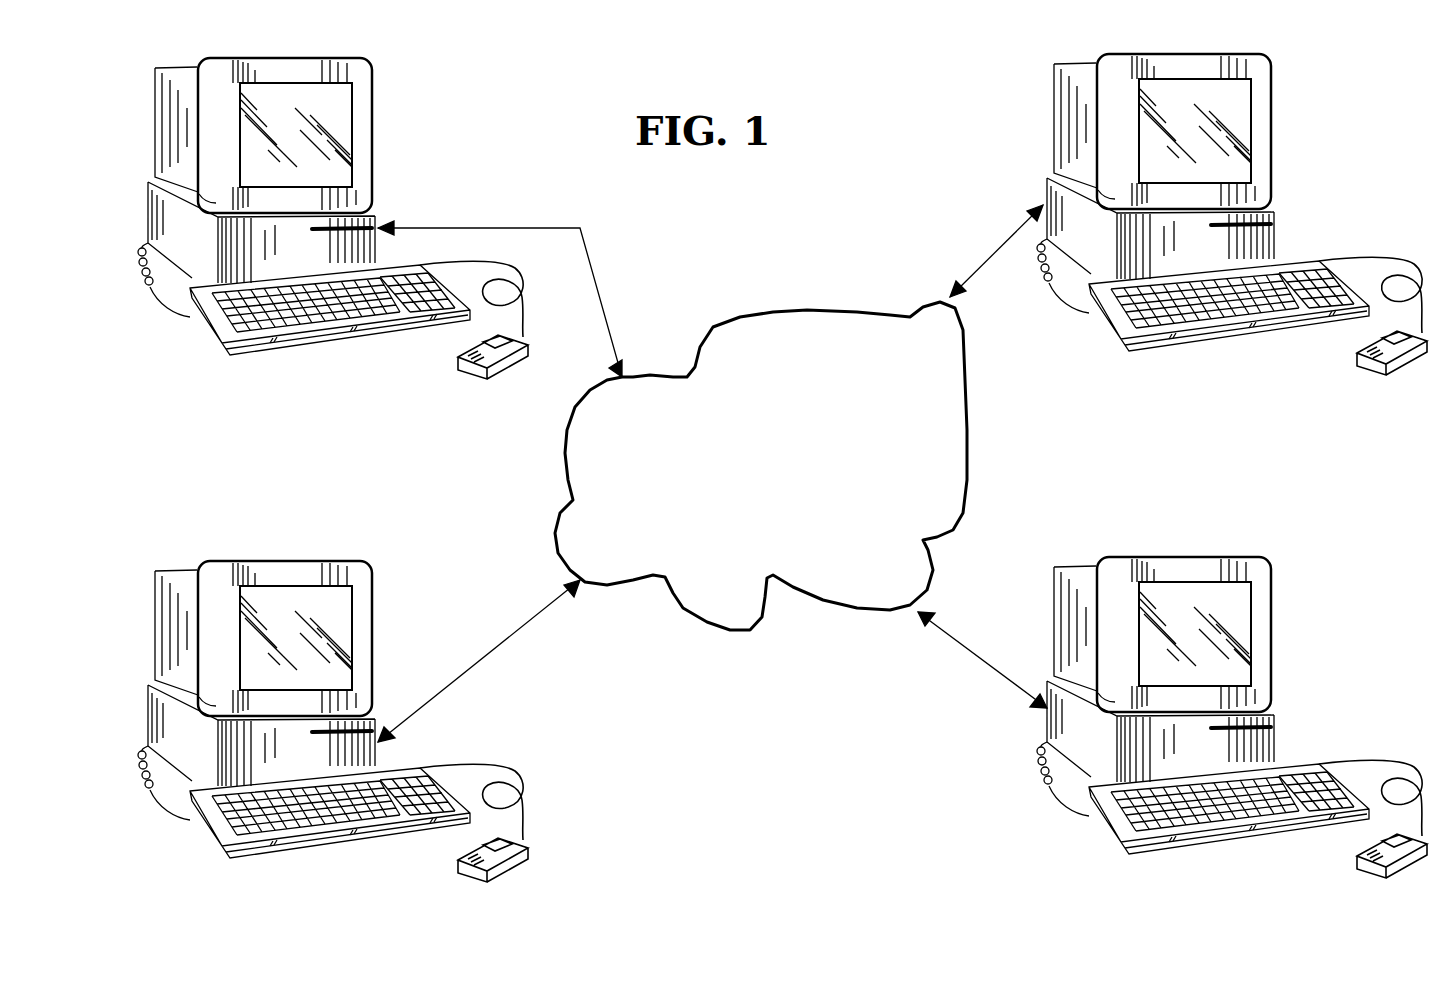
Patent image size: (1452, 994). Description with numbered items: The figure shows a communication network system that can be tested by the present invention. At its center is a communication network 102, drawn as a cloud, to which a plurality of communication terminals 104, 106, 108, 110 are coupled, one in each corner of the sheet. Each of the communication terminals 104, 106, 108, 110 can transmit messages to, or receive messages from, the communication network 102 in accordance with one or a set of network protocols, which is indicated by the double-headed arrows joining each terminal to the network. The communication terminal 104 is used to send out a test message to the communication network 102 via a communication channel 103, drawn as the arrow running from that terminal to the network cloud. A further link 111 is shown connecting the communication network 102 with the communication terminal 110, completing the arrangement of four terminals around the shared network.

The communication network 102 is at (797, 308).
The communication channel 103 is at (592, 268).
The communication terminal 104 is at (372, 156).
The communication terminal 106 is at (1270, 141).
The communication terminal 108 is at (372, 608).
The communication terminal 110 is at (1270, 635).
The communication link 111 is at (967, 652).